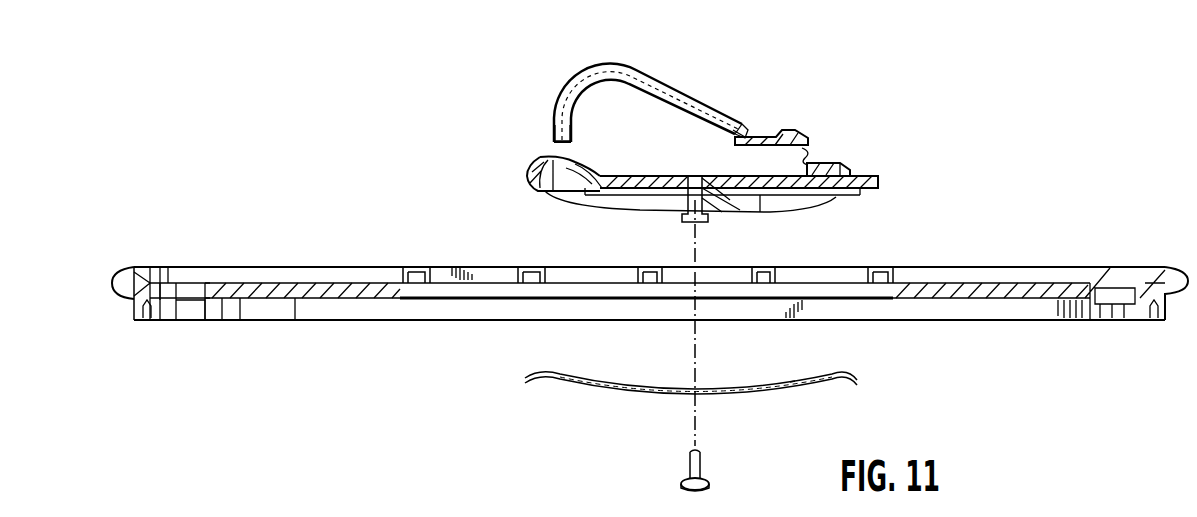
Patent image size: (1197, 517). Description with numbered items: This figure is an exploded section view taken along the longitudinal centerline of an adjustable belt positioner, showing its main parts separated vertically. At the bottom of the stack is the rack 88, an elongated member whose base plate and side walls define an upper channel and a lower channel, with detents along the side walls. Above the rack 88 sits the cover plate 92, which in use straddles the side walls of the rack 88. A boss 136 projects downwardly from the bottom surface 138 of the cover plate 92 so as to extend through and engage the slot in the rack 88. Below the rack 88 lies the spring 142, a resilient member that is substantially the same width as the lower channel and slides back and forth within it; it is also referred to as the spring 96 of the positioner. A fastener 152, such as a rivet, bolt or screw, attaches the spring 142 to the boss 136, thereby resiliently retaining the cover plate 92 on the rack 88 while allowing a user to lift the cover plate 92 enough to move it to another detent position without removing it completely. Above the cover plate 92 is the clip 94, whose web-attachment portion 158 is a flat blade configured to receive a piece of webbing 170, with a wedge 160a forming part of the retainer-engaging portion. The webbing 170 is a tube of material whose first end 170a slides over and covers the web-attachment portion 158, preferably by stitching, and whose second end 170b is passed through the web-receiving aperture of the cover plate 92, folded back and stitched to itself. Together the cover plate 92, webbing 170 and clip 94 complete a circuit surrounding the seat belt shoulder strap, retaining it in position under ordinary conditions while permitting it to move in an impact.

The rack 88 is at (361, 266).
The cover plate 92 is at (626, 177).
The clip 94 is at (775, 108).
The spring 96 is at (577, 380).
The boss 136 is at (707, 218).
The bottom surface 138 is at (767, 190).
The spring 142 is at (793, 386).
The fastener 152 is at (704, 468).
The web-attachment portion 158 is at (708, 108).
The retainer tab 160a is at (796, 125).
The webbing 170 is at (657, 86).
The first end 170a is at (714, 133).
The second end 170b is at (550, 130).